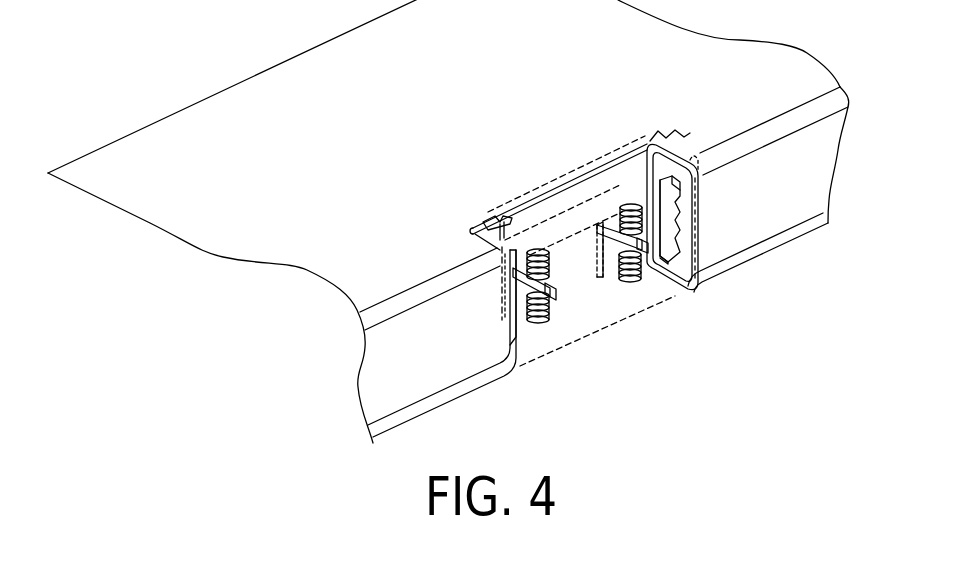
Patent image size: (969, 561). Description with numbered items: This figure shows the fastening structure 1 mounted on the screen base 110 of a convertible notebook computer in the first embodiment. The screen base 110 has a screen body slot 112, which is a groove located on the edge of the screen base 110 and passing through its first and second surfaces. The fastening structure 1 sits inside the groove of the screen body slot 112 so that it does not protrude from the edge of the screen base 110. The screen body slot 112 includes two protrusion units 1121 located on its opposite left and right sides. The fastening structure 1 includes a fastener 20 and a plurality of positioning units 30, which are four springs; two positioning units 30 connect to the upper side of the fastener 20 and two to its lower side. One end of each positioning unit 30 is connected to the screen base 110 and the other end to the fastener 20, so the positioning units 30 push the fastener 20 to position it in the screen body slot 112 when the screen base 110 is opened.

The fastening structure 1 is at (536, 253).
The fastener 20 is at (585, 192).
The positioning unit 30 is at (624, 206).
The screen base 110 is at (113, 175).
The screen body slot 112 is at (704, 164).
The protrusion unit 1121 is at (672, 226).